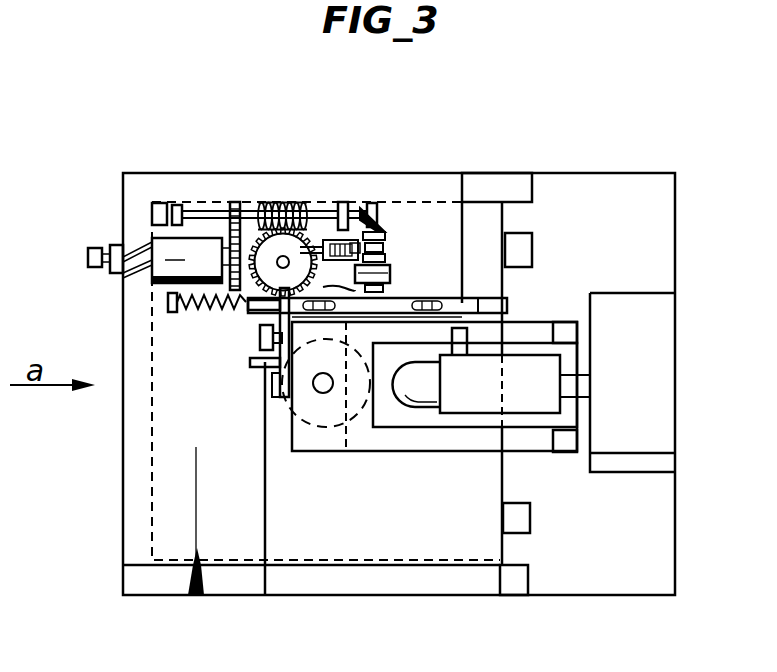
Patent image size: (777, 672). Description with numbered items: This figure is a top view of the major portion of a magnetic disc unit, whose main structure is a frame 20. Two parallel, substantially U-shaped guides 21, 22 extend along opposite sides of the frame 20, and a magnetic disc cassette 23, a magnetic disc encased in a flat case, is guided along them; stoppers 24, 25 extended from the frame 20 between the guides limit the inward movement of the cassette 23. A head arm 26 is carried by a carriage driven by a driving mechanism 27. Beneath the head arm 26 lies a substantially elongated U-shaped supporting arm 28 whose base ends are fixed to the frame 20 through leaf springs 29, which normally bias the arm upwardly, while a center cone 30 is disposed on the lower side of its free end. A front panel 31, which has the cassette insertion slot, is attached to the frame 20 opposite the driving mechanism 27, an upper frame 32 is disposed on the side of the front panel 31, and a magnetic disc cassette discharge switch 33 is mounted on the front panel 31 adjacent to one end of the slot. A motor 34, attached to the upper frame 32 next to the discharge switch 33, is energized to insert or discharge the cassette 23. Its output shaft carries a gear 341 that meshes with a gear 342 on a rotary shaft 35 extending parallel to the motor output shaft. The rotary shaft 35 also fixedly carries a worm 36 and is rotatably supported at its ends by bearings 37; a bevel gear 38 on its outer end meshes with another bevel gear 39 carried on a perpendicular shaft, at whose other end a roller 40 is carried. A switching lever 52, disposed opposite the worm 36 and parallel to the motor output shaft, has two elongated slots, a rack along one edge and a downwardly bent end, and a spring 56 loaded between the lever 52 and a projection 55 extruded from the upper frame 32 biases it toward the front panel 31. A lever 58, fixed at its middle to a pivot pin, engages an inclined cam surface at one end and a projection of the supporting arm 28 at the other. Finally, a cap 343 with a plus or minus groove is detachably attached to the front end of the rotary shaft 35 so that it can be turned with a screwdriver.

The frame 20 is at (675, 504).
The guide 21 is at (535, 190).
The guide 22 is at (528, 578).
The magnetic disc cassette 23 is at (487, 555).
The stopper 24 is at (533, 245).
The stopper 25 is at (530, 522).
The head arm 26 is at (473, 408).
The driving mechanism 27 is at (655, 322).
The supporting arm 28 is at (433, 442).
The leaf springs 29 is at (570, 328).
The center cone 30 is at (290, 410).
The front panel 31 is at (123, 531).
The upper frame 32 is at (240, 547).
The magnetic disc cassette discharge switch 33 is at (92, 248).
The motor 34 is at (197, 243).
The rotary shaft 35 is at (232, 202).
The worm 36 is at (342, 202).
The bearings 37 is at (174, 204).
The bevel gear 38 is at (388, 198).
The bevel gear 39 is at (385, 214).
The roller 40 is at (390, 272).
The switching lever 52 is at (491, 300).
The projection 55 is at (168, 302).
The spring 56 is at (190, 315).
The lever 58 is at (262, 364).
The gear 341 is at (262, 305).
The gear 342 is at (275, 202).
The cap 343 is at (152, 216).